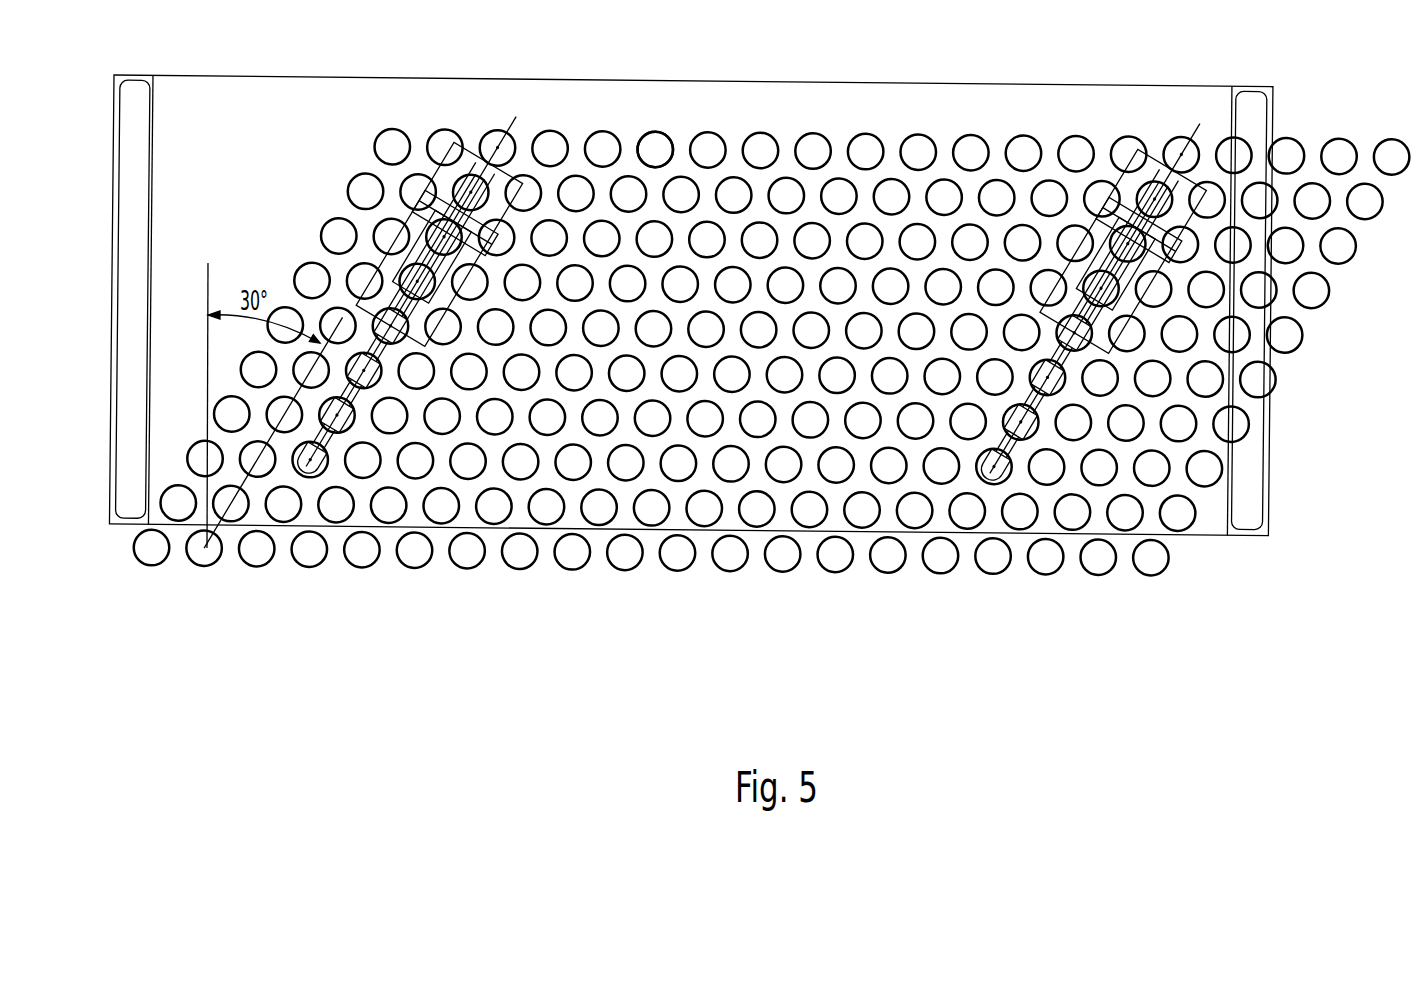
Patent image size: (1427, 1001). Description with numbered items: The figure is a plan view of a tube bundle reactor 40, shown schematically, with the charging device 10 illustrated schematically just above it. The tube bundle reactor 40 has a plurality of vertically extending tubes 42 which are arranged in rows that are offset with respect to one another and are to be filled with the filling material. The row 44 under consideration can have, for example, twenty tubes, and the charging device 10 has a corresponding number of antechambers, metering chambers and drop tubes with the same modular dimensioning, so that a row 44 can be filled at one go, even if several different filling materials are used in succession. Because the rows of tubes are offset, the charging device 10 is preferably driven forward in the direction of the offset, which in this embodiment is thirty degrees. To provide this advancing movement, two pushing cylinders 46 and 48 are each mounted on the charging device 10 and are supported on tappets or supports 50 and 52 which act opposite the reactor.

The charging device 10 is at (135, 128).
The tube bundle reactor 40 is at (701, 597).
The tubes 42 is at (656, 143).
The row 44 is at (1188, 560).
The pushing cylinder 46 is at (1158, 370).
The pushing cylinder 48 is at (405, 362).
The tappet or support 50 is at (1016, 458).
The tappet or support 52 is at (333, 452).